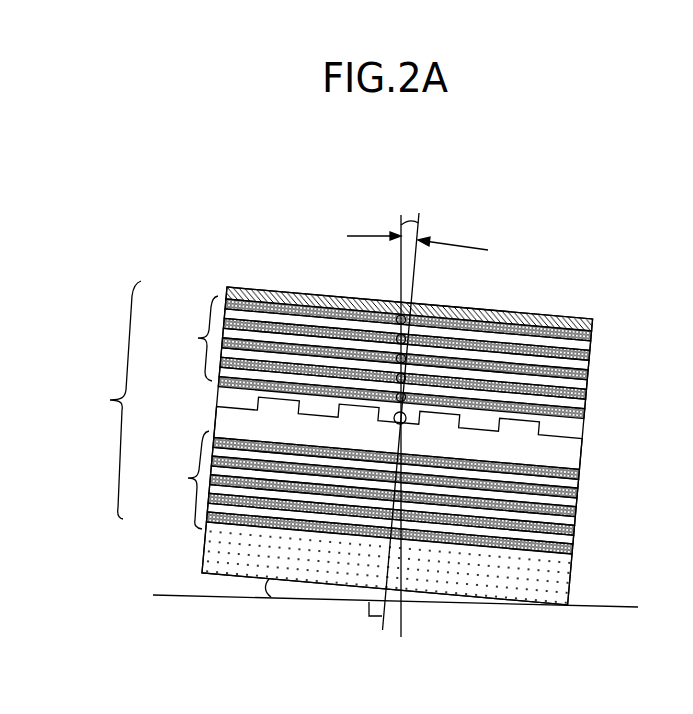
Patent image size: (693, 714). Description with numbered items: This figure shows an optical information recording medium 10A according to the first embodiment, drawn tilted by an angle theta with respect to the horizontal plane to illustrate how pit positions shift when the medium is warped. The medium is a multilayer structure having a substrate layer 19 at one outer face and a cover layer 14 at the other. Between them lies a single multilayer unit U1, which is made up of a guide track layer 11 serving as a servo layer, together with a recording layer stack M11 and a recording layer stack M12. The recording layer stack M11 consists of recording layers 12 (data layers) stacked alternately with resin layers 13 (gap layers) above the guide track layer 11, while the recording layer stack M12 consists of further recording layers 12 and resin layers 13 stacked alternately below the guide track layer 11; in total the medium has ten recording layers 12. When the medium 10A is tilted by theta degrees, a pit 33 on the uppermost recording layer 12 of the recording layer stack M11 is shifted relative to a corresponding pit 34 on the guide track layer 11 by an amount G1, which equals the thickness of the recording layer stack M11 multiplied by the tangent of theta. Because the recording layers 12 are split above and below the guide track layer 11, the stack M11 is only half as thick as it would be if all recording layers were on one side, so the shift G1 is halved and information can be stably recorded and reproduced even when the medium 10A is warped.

The optical information recording medium 10A is at (283, 181).
The substrate layer 19 is at (577, 313).
The resin layer 13 is at (585, 377).
The recording layer 12 is at (586, 401).
The guide track layer 11 is at (577, 453).
The cover layer 14 is at (565, 580).
The pit 33 is at (397, 314).
The pit 34 is at (404, 423).
The positional shift angle G1 is at (418, 214).
The multilayer unit U1 is at (107, 400).
The recording layer stack M11 is at (180, 338).
The recording layer stack M12 is at (170, 480).